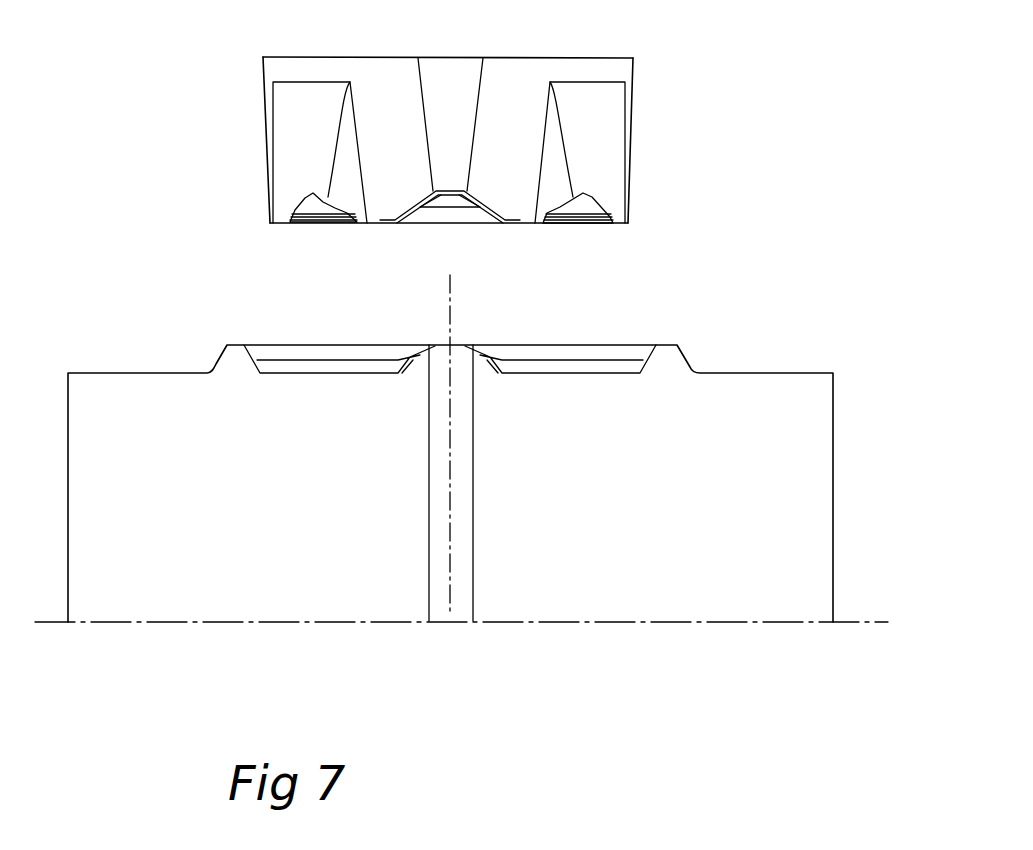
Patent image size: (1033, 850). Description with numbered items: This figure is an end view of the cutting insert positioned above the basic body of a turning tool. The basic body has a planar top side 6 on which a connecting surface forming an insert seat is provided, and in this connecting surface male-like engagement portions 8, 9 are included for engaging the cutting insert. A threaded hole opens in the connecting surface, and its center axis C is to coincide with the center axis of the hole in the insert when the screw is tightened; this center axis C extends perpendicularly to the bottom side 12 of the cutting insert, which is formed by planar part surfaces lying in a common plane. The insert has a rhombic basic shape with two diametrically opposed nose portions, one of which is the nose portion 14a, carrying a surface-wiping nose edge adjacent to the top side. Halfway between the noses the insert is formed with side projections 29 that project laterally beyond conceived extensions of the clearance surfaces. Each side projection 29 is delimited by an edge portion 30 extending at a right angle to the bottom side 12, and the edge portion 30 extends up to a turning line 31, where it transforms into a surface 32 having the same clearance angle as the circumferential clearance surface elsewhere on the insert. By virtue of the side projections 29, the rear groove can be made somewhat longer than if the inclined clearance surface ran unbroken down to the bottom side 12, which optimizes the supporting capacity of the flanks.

The top side of the basic body 6 is at (738, 373).
The engagement portion 8 is at (485, 362).
The engagement portion 9 is at (283, 359).
The bottom side 12 is at (372, 226).
The nose portion 14a is at (453, 110).
The side projection 29 is at (270, 200).
The edge portion 30 is at (633, 155).
The turning line 31 is at (636, 81).
The surface 32 is at (634, 70).
The center axis C is at (448, 300).